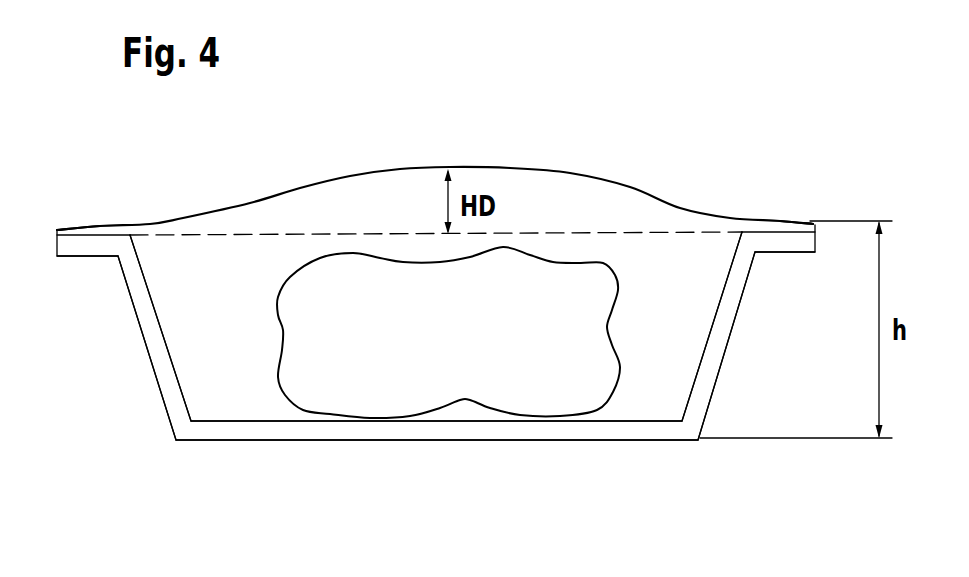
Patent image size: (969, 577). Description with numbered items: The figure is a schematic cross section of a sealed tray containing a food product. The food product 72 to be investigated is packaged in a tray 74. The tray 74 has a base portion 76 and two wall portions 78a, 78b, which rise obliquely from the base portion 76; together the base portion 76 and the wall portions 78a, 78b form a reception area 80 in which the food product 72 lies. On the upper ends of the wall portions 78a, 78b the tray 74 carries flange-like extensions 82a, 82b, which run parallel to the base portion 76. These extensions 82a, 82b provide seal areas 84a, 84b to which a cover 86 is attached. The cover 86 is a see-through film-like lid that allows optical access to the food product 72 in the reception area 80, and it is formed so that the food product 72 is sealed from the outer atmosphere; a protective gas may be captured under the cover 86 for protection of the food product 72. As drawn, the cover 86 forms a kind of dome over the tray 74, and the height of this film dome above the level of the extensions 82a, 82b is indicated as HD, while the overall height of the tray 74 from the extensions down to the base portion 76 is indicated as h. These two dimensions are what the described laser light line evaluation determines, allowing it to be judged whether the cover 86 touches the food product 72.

The food product 72 is at (476, 373).
The tray 74 is at (436, 370).
The base portion 76 is at (244, 431).
The wall portion 78a is at (155, 358).
The wall portion 78b is at (715, 353).
The reception area 80 is at (652, 400).
The flange-like extension 82a is at (66, 258).
The flange-like extension 82b is at (805, 255).
The seal area 84a is at (59, 229).
The seal area 84b is at (815, 225).
The cover 86 is at (518, 167).